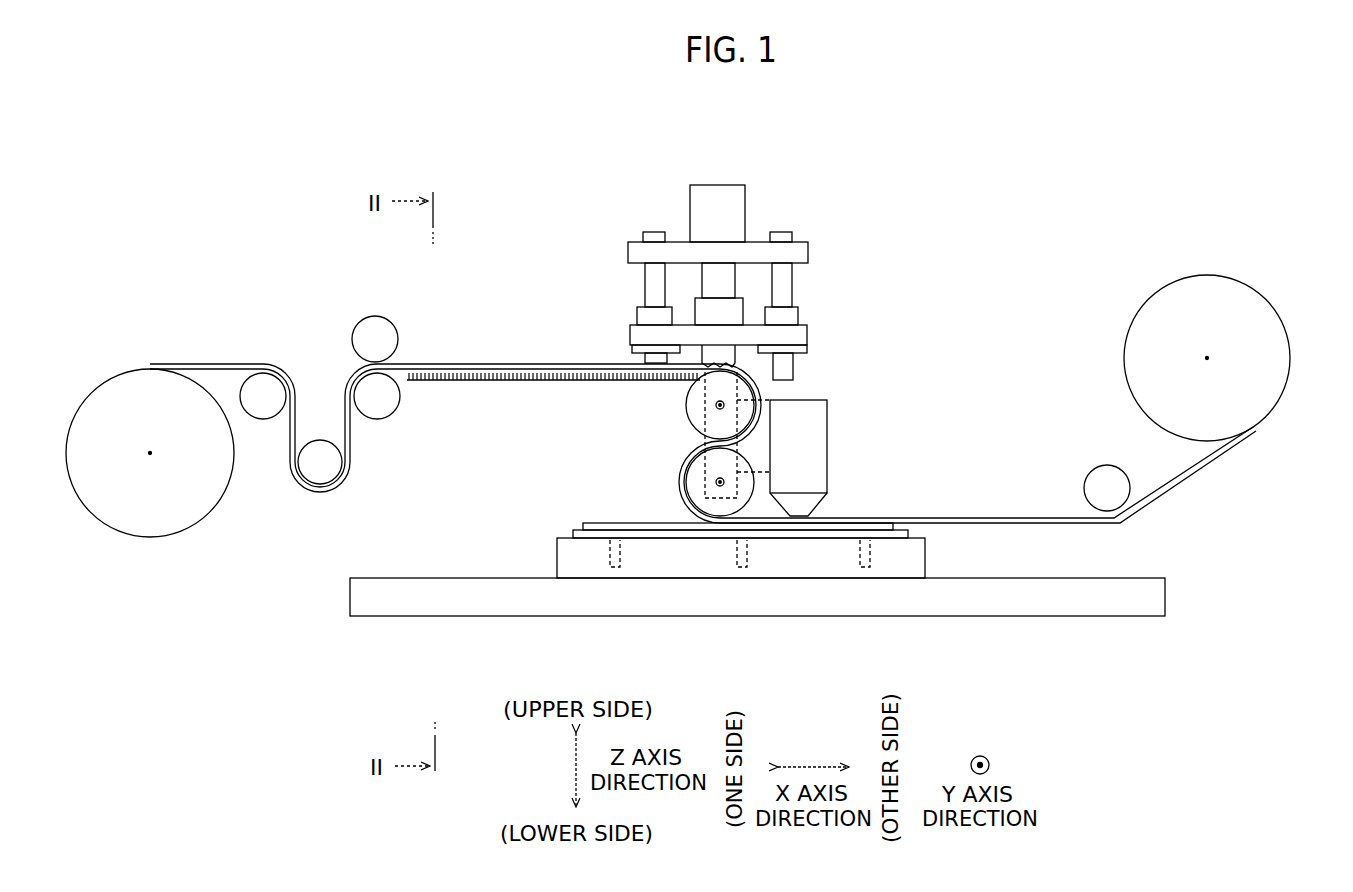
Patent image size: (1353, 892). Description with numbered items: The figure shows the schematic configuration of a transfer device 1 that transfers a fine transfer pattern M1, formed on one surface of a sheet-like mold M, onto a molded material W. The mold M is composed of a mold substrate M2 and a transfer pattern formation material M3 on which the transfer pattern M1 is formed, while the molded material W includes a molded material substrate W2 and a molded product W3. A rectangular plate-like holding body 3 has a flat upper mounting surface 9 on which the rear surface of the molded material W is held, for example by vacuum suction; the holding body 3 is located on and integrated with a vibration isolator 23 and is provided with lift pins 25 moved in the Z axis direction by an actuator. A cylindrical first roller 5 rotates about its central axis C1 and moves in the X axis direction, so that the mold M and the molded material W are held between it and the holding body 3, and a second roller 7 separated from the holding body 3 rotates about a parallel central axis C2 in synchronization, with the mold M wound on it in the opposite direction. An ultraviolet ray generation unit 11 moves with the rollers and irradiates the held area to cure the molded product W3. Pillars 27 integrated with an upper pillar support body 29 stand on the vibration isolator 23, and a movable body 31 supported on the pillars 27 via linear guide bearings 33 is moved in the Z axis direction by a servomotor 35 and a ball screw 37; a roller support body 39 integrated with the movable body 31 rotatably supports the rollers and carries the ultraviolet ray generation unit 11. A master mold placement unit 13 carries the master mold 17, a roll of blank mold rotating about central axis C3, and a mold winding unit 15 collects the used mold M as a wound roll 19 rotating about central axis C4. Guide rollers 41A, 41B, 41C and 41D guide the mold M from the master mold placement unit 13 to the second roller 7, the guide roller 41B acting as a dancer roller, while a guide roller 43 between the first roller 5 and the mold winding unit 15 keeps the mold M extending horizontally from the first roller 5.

The transfer device 1 is at (1000, 171).
The holding body 3 is at (741, 610).
The first roller 5 is at (694, 482).
The second roller 7 is at (694, 407).
The mounting surface 9 is at (851, 522).
The ultraviolet ray generation unit 11 is at (831, 461).
The master mold placement unit 13 is at (127, 368).
The mold winding unit 15 is at (1227, 272).
The master mold 17 is at (97, 506).
The wound roll 19 is at (1279, 399).
The vibration isolator 23 is at (1036, 605).
The lift pins 25 is at (872, 551).
The pillars 27 is at (644, 285).
The upper pillar support body 29 is at (809, 251).
The movable body 31 is at (808, 338).
The linear guide bearings 33 is at (636, 318).
The servomotor 35 is at (718, 184).
The ball screw 37 is at (737, 279).
The roller support body 39 is at (737, 416).
The guide roller 41A is at (265, 390).
The guide roller 41B is at (322, 483).
The guide roller 41C is at (380, 416).
The guide roller 41D is at (372, 333).
The guide roller 43 is at (1107, 476).
The central axis of first roller C1 is at (716, 482).
The central axis of second roller C2 is at (716, 405).
The central axis of master mold C3 is at (150, 456).
The central axis of wound roll C4 is at (1204, 358).
The sheet-like mold M is at (703, 399).
The transfer pattern M1 is at (483, 382).
The mold substrate M2 is at (528, 365).
The transfer pattern formation material M3 is at (550, 382).
The molded material W is at (740, 573).
The molded material substrate W2 is at (650, 539).
The molded product W3 is at (607, 522).